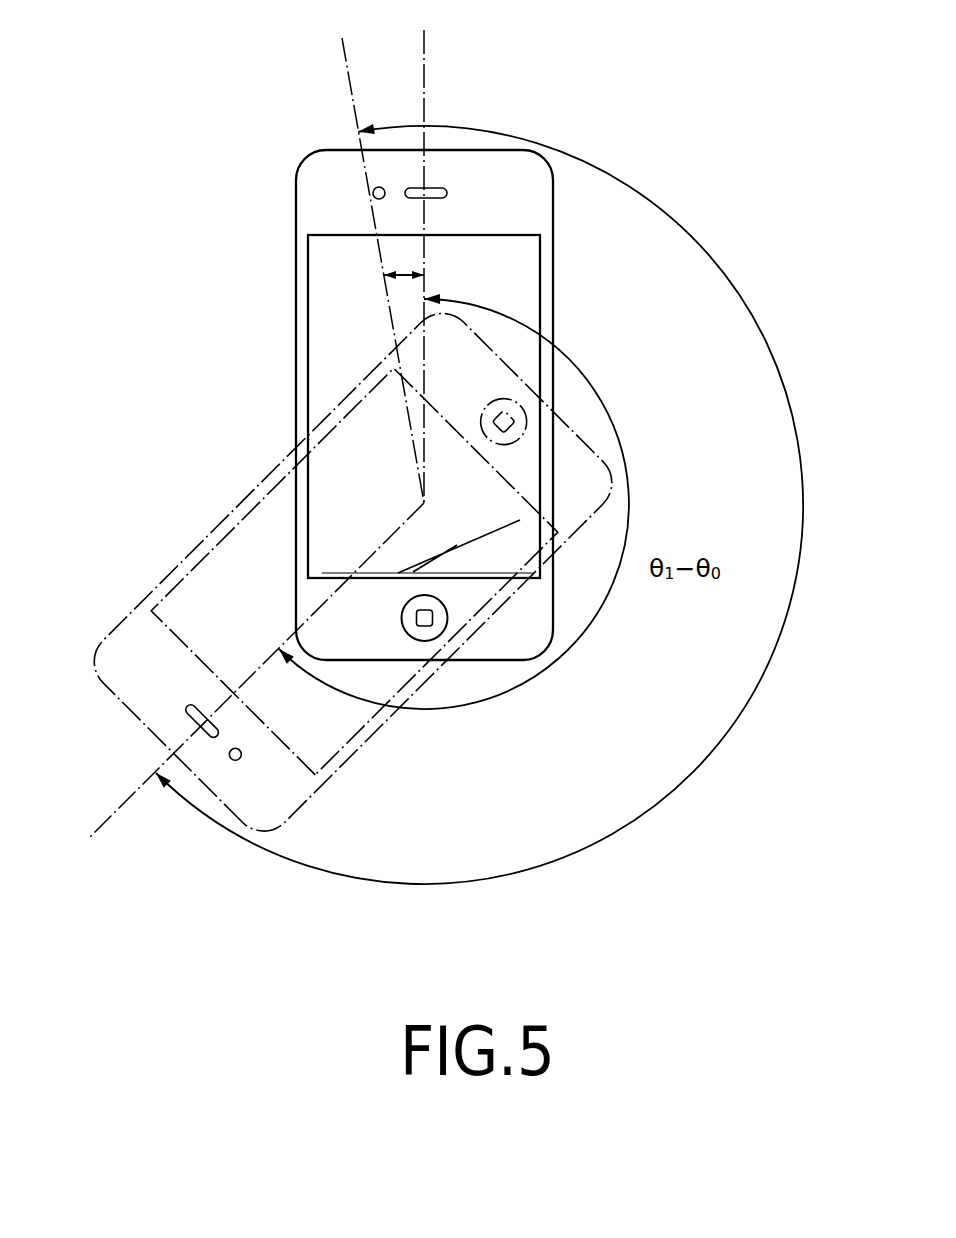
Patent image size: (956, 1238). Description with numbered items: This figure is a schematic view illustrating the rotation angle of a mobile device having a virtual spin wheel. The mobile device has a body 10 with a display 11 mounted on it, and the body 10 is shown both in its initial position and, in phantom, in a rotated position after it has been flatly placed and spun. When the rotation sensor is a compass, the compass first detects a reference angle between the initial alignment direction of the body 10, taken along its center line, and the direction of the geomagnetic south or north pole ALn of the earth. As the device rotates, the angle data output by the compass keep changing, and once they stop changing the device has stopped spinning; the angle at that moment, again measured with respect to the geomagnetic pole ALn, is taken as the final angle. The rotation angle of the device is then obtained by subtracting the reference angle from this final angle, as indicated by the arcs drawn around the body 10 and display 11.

The body 10 is at (553, 314).
The display 11 is at (525, 277).
The geomagnetic south (or north) pole ALn is at (371, 257).